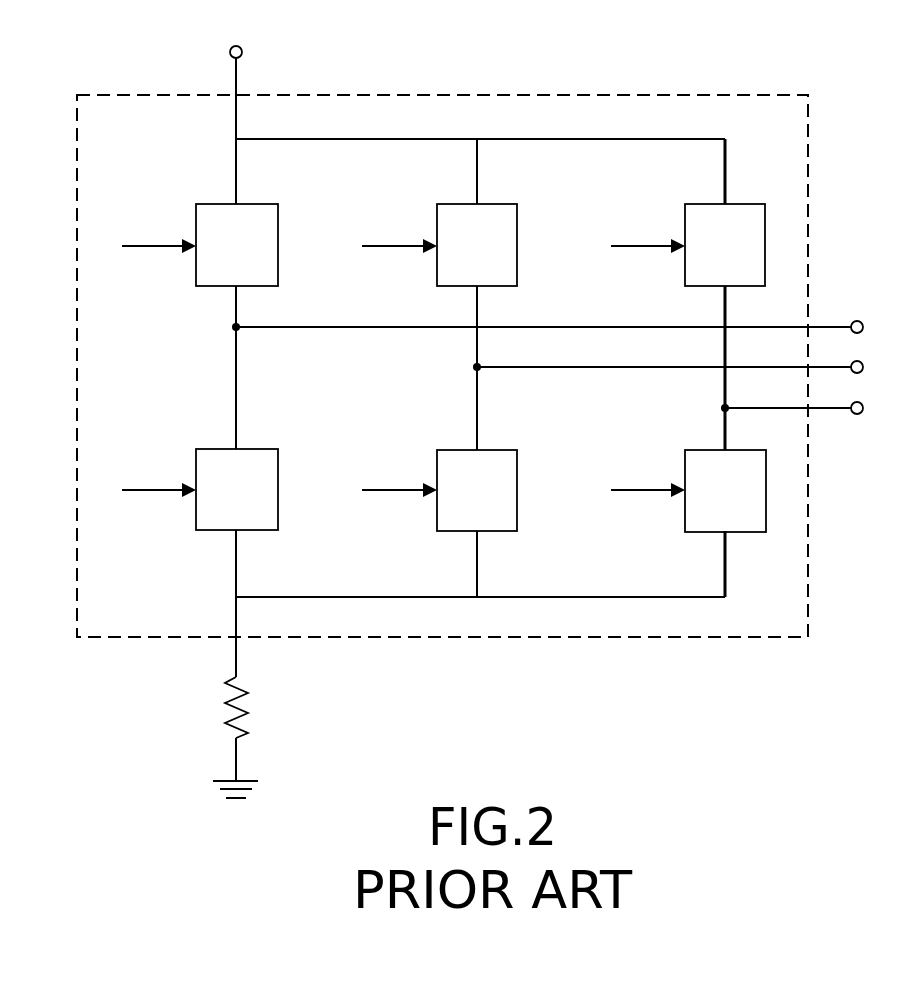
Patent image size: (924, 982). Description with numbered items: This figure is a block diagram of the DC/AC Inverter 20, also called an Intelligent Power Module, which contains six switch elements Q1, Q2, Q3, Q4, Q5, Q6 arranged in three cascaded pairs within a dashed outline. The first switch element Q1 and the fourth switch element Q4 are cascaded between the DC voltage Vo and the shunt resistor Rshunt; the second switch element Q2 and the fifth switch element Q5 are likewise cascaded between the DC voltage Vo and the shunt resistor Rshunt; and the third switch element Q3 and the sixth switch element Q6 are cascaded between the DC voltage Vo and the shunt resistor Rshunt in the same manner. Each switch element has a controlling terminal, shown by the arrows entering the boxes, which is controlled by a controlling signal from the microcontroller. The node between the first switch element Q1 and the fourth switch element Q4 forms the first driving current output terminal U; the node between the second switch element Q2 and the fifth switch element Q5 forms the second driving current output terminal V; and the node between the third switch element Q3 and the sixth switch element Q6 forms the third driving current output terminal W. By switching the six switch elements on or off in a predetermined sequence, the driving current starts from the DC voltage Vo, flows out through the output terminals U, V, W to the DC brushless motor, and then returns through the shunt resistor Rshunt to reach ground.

The DC/AC Inverter 20 is at (808, 172).
The first switch element Q1 is at (200, 245).
The second switch element Q2 is at (439, 245).
The third switch element Q3 is at (688, 245).
The fourth switch element Q4 is at (200, 489).
The fifth switch element Q5 is at (439, 490).
The sixth switch element Q6 is at (688, 491).
The DC voltage Vo is at (259, 76).
The first driving current output terminal U is at (566, 327).
The second driving current output terminal V is at (686, 368).
The third driving current output terminal W is at (813, 409).
The shunt resistor Rshunt is at (287, 707).